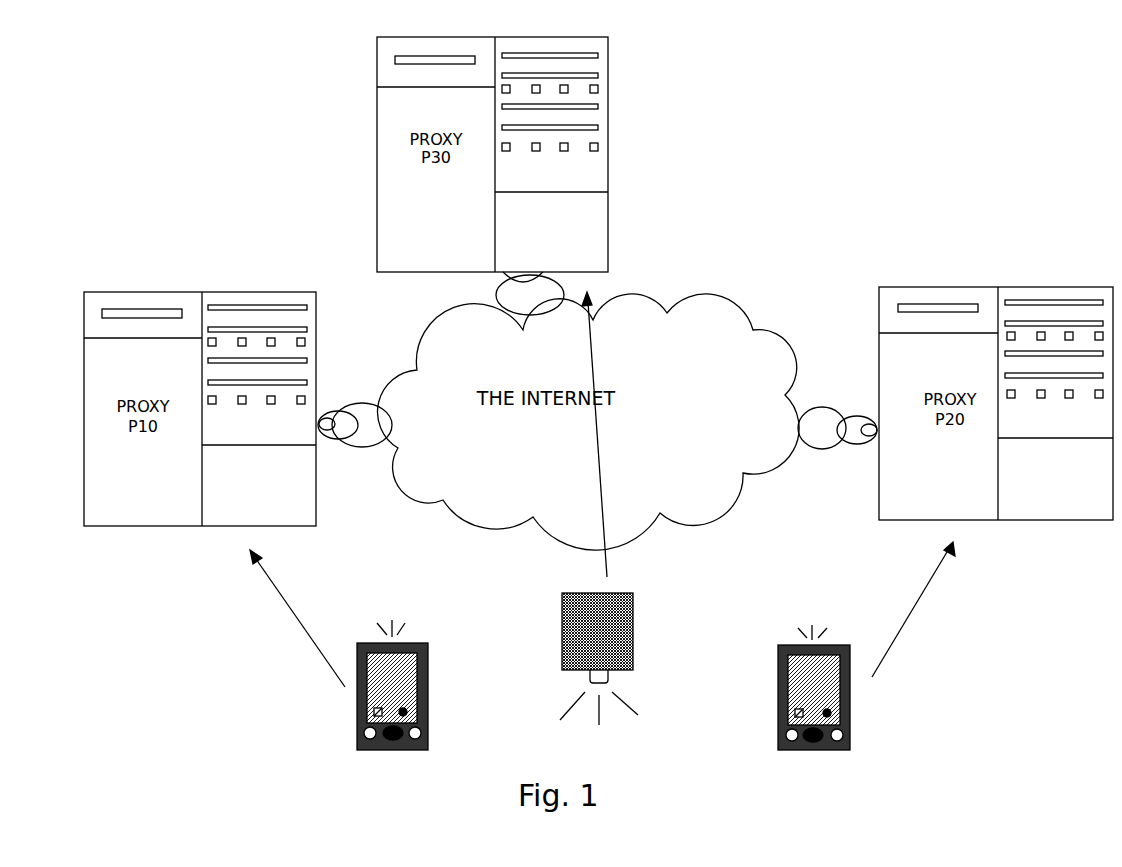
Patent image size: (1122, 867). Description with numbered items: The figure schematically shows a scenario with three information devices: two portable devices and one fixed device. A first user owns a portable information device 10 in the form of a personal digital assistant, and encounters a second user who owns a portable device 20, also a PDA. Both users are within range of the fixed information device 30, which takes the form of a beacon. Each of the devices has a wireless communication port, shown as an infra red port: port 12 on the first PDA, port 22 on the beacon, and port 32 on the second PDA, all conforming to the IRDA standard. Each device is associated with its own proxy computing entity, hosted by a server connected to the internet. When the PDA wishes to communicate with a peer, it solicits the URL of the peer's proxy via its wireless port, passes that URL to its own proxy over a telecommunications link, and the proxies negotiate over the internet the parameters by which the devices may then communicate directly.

The portable information device 10 is at (355, 723).
The wireless communication port 12 is at (408, 612).
The portable information device 20 is at (848, 745).
The wireless communication port 22 is at (622, 733).
The fixed information device 30 is at (633, 632).
The wireless communication port 32 is at (817, 608).